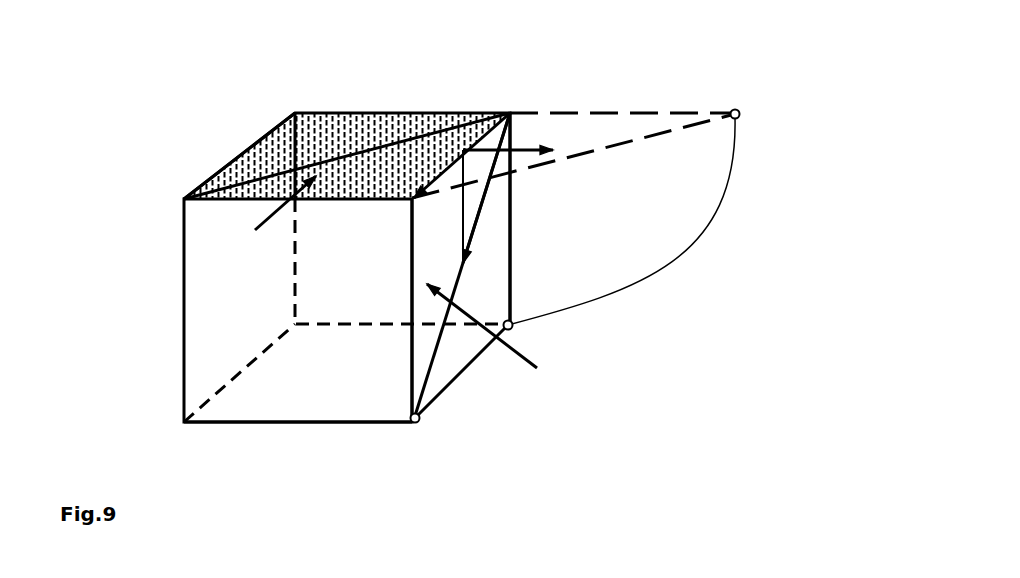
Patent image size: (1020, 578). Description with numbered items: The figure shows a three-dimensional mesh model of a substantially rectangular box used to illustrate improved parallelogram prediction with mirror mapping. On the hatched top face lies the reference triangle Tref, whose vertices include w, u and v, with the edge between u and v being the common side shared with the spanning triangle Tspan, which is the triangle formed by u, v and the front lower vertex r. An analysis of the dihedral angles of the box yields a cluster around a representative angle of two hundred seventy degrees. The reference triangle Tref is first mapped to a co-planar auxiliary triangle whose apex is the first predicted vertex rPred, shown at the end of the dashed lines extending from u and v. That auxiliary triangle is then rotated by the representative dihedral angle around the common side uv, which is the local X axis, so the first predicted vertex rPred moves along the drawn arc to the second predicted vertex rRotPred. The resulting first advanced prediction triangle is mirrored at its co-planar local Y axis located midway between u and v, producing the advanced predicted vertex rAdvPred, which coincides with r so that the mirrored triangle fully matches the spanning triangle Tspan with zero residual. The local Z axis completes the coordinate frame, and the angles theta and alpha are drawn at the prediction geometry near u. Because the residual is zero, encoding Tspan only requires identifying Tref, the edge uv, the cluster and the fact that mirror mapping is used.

The vertex of reference triangle w is at (228, 156).
The vertex u is at (510, 205).
The vertex v is at (398, 310).
The vertex r is at (298, 409).
The local X axis X is at (462, 164).
The local Y axis Y is at (486, 200).
The local Z axis Z is at (516, 142).
The angle theta is at (458, 140).
The angle alpha is at (529, 132).
The reference triangle Tref is at (269, 217).
The spanning triangle Tspan is at (506, 338).
The advanced predicted vertex rAdvPred is at (462, 268).
The second predicted vertex rRotPred is at (620, 229).
The first predicted vertex rPred is at (759, 105).